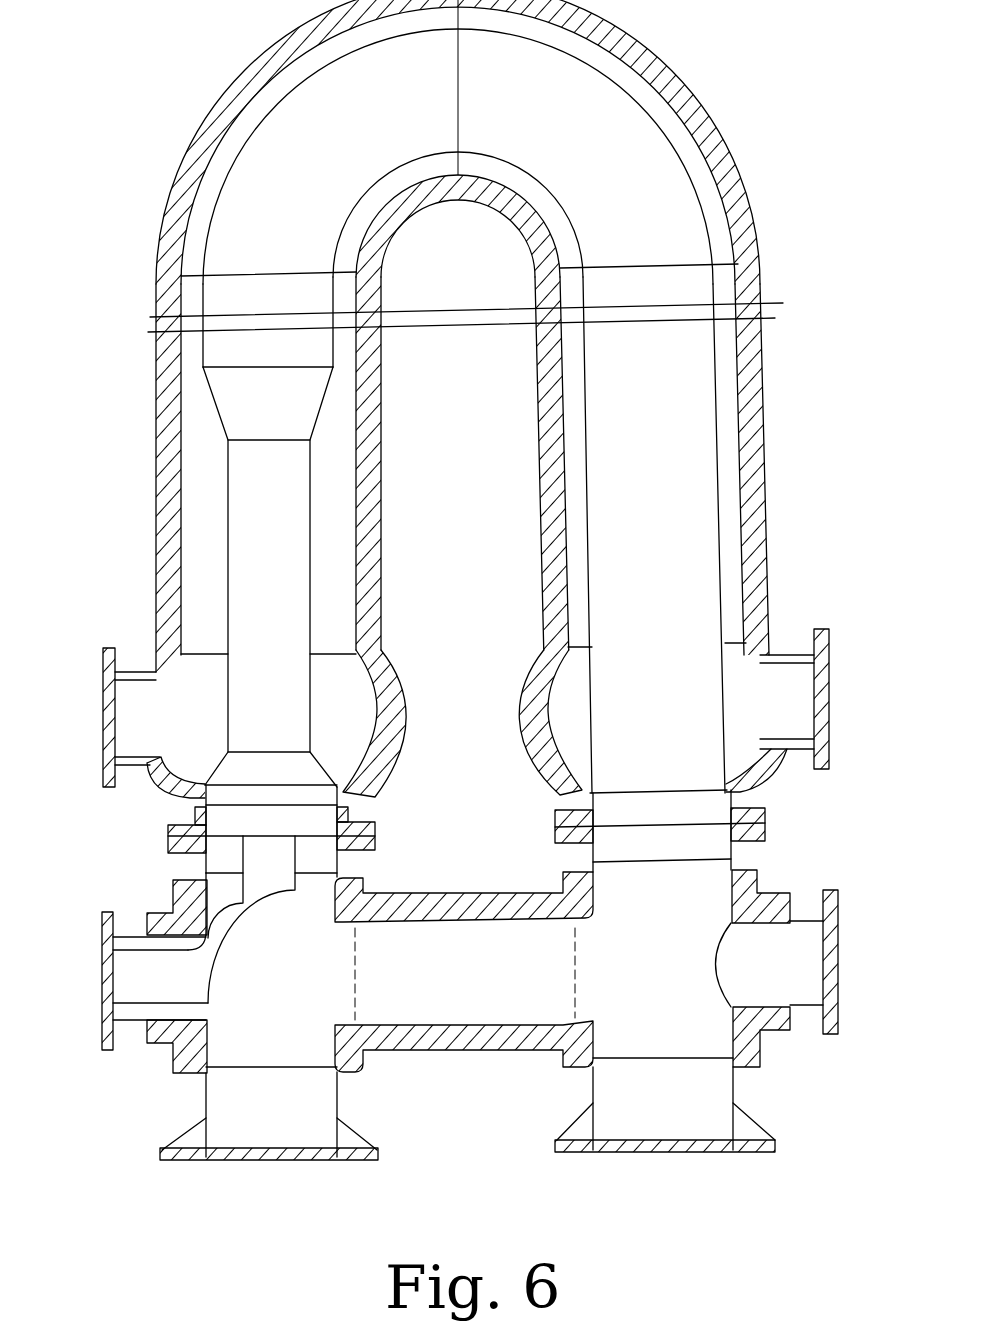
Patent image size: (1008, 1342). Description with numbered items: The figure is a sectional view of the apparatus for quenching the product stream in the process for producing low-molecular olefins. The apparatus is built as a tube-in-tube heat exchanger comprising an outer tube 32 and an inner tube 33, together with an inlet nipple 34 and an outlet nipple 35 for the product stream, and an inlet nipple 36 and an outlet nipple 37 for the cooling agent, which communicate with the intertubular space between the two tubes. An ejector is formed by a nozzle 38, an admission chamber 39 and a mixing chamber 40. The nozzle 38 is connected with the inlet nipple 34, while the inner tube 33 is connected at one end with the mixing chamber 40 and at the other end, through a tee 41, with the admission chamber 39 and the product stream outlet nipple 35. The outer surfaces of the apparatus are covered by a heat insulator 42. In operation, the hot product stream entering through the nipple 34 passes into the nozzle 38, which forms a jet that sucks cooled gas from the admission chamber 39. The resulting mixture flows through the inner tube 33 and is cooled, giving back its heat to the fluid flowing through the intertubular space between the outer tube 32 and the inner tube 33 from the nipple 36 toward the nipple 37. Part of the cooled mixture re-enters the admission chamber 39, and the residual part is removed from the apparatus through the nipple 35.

The outer tube 32 is at (202, 172).
The inner tube 33 is at (645, 100).
The inlet nipple 34 is at (102, 1033).
The outlet nipple 35 is at (836, 1002).
The inlet nipple 36 is at (829, 743).
The outlet nipple 37 is at (102, 758).
The nozzle 38 is at (207, 875).
The admission chamber 39 is at (260, 1023).
The mixing chamber 40 is at (247, 495).
The tee 41 is at (673, 1017).
The heat insulator 42 is at (757, 250).